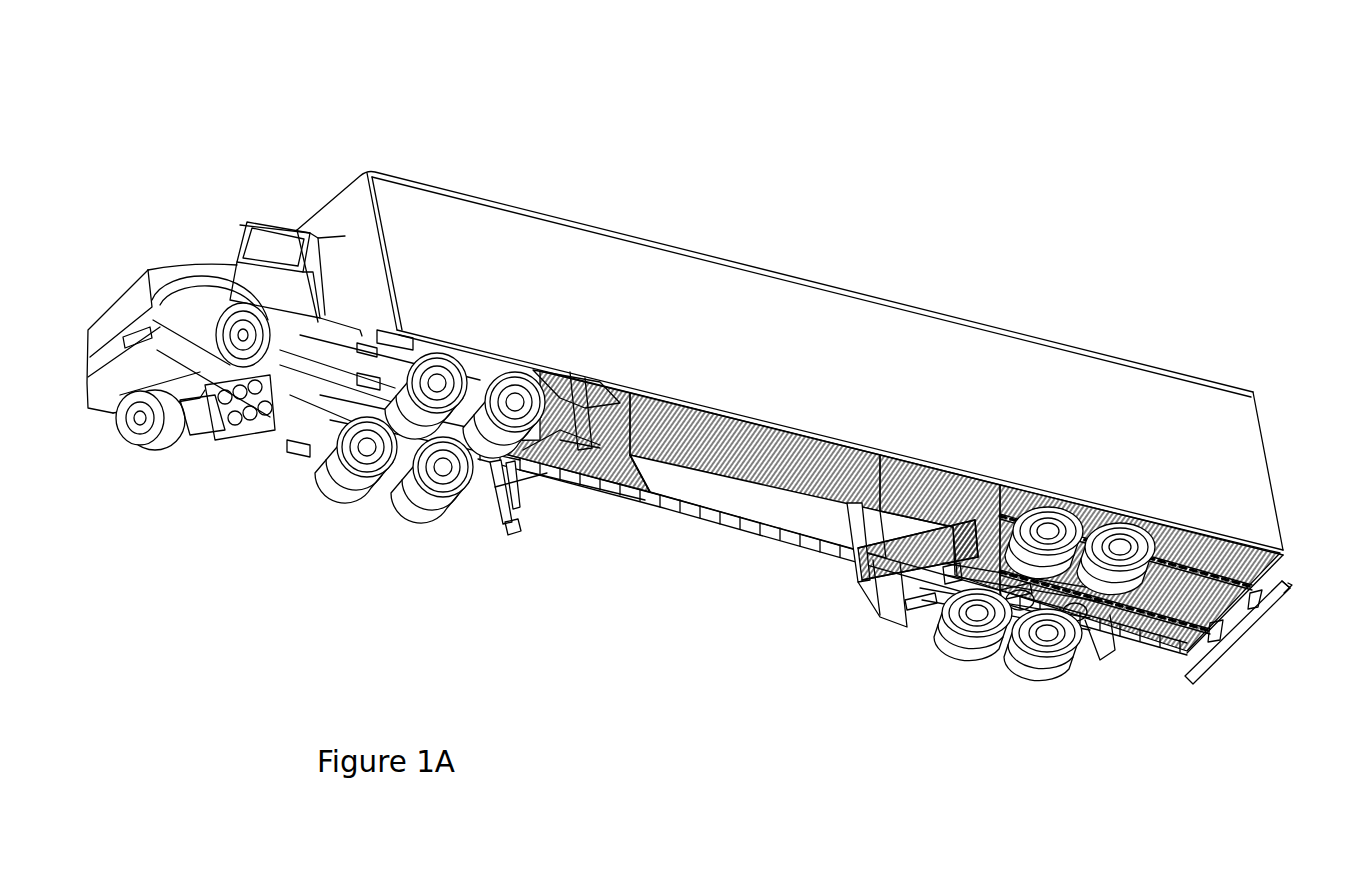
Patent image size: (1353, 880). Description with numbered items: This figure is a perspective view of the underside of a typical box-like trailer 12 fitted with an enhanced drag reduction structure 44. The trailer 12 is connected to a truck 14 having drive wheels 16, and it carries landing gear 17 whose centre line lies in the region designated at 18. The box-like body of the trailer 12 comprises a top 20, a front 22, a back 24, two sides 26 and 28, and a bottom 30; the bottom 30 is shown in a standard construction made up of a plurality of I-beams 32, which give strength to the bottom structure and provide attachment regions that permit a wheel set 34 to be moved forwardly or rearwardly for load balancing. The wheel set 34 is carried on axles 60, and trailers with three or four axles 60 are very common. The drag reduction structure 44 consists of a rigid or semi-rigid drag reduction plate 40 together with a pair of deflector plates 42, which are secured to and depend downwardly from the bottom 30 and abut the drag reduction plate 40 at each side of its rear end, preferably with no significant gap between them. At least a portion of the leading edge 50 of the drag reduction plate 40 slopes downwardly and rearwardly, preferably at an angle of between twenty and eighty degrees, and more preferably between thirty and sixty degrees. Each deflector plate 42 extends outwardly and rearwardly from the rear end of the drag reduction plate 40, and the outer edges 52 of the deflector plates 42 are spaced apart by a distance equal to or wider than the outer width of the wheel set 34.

The trailer 12 is at (869, 368).
The truck 14 is at (217, 447).
The drive wheels 16 is at (352, 508).
The landing gear 17 is at (498, 540).
The landing gear centre line region 18 is at (583, 392).
The top 20 is at (815, 409).
The front 22 is at (338, 222).
The back 24 is at (1290, 478).
The side 26 is at (879, 529).
The side 28 is at (1110, 383).
The bottom 30 is at (680, 433).
The I-beams 32 is at (774, 433).
The wheel set 34 is at (995, 672).
The drag reduction plate 40 is at (752, 505).
The deflector plates 42 is at (932, 505).
The drag reduction structure 44 is at (705, 512).
The leading edge 50 is at (650, 490).
The outer edges 52 is at (1008, 495).
The axles 60 is at (1013, 612).